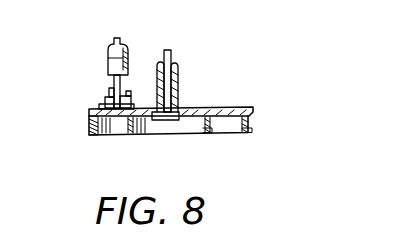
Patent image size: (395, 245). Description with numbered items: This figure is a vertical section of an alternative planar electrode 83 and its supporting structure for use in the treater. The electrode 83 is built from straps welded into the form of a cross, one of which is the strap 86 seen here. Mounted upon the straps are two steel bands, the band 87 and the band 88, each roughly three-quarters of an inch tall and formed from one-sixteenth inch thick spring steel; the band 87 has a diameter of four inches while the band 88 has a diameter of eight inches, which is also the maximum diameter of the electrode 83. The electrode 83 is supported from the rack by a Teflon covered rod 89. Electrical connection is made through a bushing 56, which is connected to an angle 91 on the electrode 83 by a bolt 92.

The bushing 56 is at (108, 64).
The planar electrode 83 is at (117, 136).
The strap 86 is at (197, 110).
The steel band 87 is at (206, 133).
The steel band 88 is at (247, 133).
The Teflon covered rod 89 is at (172, 86).
The angle 91 is at (99, 106).
The bolt 92 is at (128, 93).